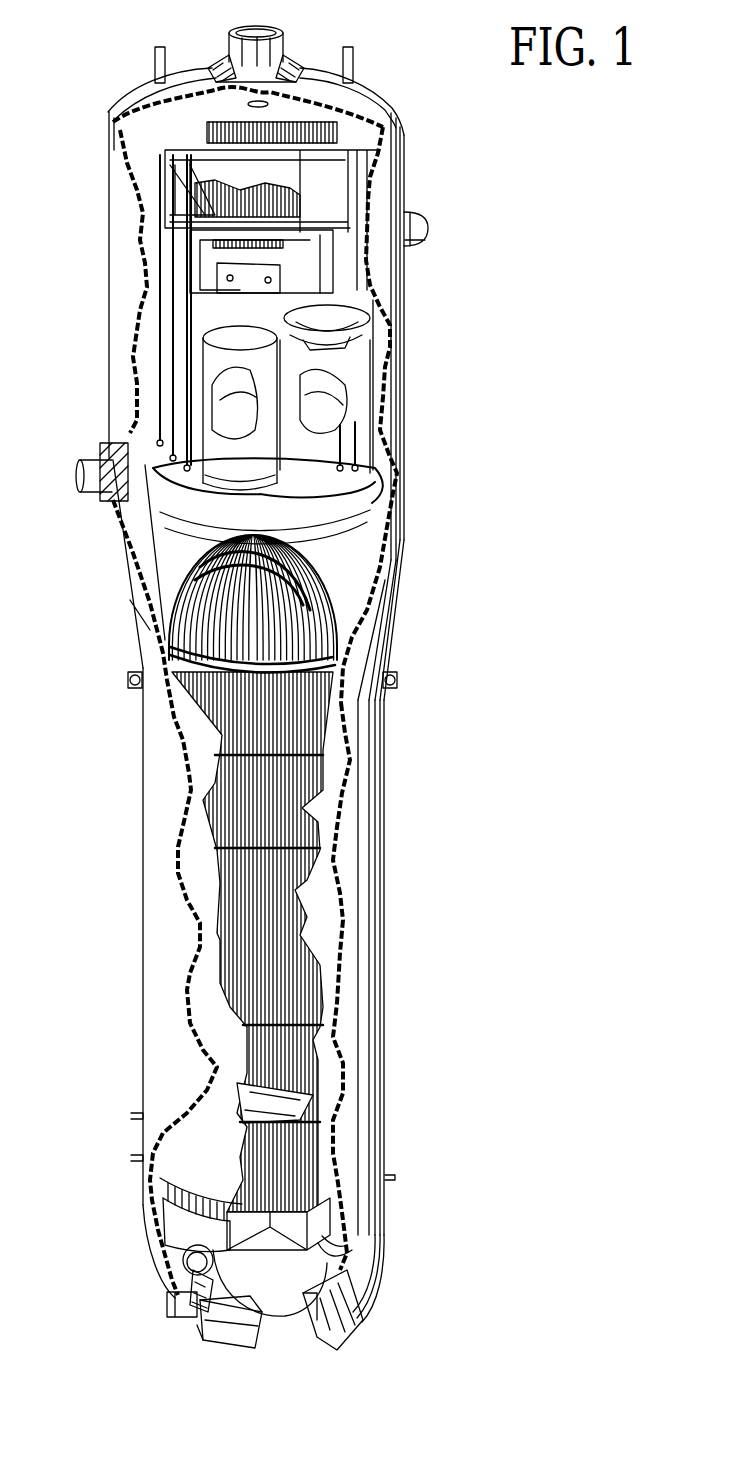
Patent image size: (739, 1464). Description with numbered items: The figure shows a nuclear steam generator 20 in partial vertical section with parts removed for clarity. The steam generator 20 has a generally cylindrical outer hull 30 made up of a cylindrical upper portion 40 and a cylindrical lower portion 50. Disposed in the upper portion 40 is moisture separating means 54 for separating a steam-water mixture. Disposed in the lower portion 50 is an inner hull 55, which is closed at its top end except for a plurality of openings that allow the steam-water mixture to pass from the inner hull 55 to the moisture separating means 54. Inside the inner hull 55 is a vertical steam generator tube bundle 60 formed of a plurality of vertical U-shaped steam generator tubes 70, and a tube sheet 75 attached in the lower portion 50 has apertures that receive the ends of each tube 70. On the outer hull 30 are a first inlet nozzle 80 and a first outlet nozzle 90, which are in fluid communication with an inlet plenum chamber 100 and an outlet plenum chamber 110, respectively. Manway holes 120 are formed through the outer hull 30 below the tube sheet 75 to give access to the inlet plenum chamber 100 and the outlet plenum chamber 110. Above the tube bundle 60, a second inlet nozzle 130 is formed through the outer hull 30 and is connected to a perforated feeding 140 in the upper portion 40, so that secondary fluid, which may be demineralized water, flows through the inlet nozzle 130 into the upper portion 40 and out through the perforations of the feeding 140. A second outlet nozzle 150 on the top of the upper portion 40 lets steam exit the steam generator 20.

The nuclear steam generator 20 is at (430, 452).
The outer hull 30 is at (408, 287).
The upper portion 40 is at (120, 218).
The lower portion 50 is at (157, 970).
The moisture separating means 54 is at (177, 163).
The inner hull 55 is at (328, 750).
The vertical steam generator tube bundle 60 is at (287, 993).
The vertical U-shaped steam generator tubes 70 is at (300, 866).
The tube sheet 75 is at (178, 1213).
The first inlet nozzle 80 is at (217, 1333).
The first outlet nozzle 90 is at (353, 1310).
The inlet plenum chamber 100 is at (183, 1245).
The outlet plenum chamber 110 is at (327, 1253).
The manway holes 120 is at (180, 1272).
The second inlet nozzle 130 is at (110, 503).
The perforated feeding 140 is at (140, 547).
The second outlet nozzle 150 is at (268, 32).